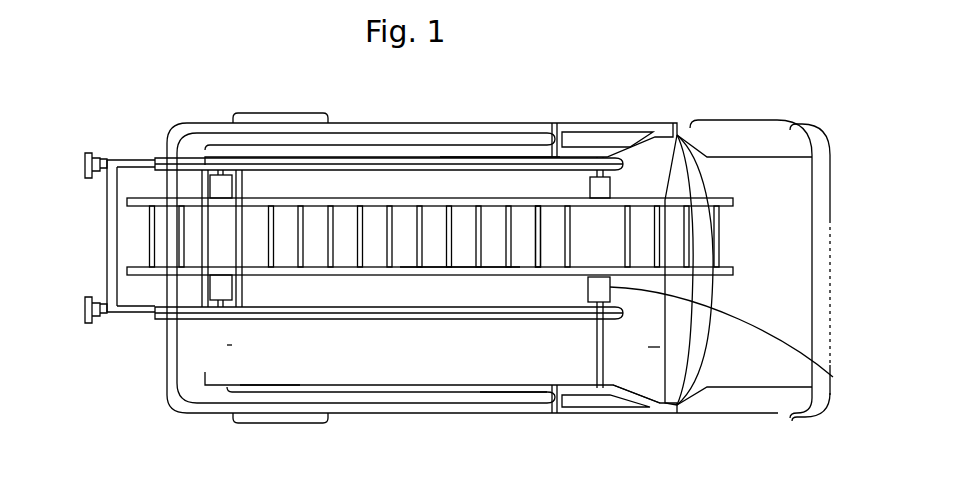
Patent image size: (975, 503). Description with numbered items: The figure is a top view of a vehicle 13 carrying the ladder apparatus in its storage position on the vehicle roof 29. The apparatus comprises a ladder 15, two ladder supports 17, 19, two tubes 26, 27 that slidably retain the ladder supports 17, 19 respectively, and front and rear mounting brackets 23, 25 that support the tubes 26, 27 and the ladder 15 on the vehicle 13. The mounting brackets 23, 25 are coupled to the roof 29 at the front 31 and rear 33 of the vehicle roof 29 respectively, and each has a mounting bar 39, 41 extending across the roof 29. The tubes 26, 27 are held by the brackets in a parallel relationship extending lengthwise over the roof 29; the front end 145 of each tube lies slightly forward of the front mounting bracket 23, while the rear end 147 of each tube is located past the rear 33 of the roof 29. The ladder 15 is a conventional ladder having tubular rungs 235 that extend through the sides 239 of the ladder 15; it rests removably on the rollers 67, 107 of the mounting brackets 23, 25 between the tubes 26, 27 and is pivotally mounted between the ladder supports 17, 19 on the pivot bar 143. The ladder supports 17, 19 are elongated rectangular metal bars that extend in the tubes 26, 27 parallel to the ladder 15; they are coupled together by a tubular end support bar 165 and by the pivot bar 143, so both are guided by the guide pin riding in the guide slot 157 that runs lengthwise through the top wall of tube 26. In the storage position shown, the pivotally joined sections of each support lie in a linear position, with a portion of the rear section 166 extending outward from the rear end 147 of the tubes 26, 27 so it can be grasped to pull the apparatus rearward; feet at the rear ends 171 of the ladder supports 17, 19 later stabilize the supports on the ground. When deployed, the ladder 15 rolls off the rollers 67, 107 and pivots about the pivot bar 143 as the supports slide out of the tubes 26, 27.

The vehicle 13 is at (795, 247).
The ladder 15 is at (388, 198).
The ladder support 17 is at (128, 318).
The ladder support 19 is at (125, 158).
The front mounting bracket 23 is at (838, 385).
The rear mounting bracket 25 is at (207, 287).
The tube 26 is at (623, 408).
The tube 27 is at (487, 157).
The vehicle roof 29 is at (522, 386).
The front of the vehicle roof 31 is at (608, 368).
The rear of the vehicle roof 33 is at (263, 373).
The mounting bar 39 is at (648, 347).
The mounting bar 41 is at (227, 345).
The roller 67 is at (610, 192).
The roller 107 is at (218, 290).
The pivot bar 143 is at (247, 178).
The front end of tube 145 is at (677, 135).
The rear end of tube 147 is at (152, 158).
The guide slot 157 is at (563, 320).
The tubular end support bar 165 is at (110, 250).
The rear section 166 is at (133, 165).
The rear end of ladder support 171 is at (110, 318).
The tubular rung 235 is at (547, 235).
The side of the ladder 239 is at (463, 277).